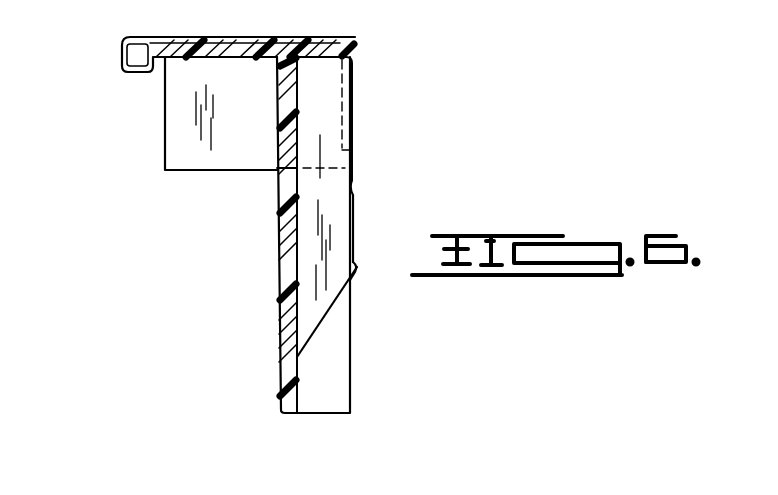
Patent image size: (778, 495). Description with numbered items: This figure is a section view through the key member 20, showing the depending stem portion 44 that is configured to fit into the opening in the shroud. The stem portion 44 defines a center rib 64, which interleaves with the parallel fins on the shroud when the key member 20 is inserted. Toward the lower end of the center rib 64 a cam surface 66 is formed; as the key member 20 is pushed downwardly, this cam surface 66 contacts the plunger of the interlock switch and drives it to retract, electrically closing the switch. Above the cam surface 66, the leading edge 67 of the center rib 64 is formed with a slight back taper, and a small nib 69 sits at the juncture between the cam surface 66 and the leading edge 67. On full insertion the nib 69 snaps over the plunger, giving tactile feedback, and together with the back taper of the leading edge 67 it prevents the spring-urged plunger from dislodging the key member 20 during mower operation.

The key member 20 is at (114, 147).
The stem portion 44 is at (280, 275).
The center rib 64 is at (303, 235).
The cam surface 66 is at (323, 320).
The leading edge 67 is at (352, 186).
The nib 69 is at (358, 268).